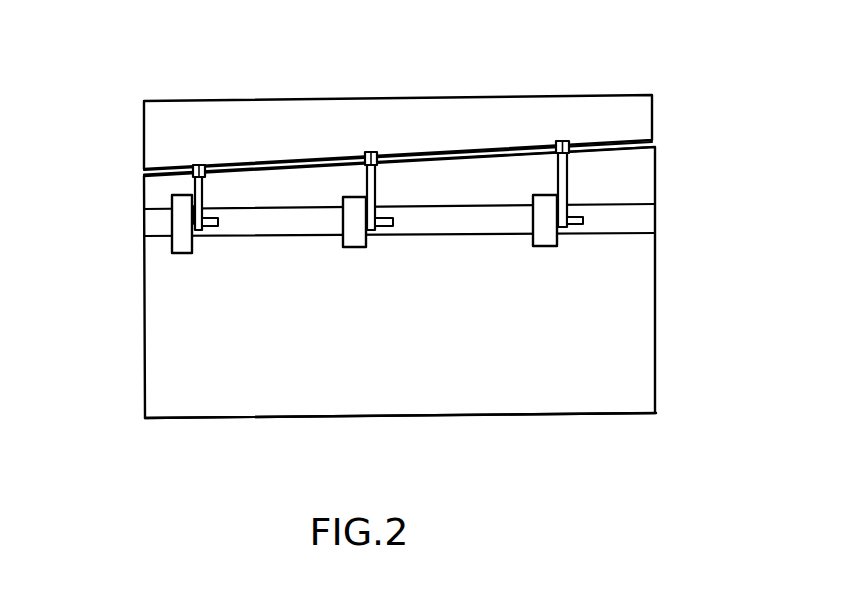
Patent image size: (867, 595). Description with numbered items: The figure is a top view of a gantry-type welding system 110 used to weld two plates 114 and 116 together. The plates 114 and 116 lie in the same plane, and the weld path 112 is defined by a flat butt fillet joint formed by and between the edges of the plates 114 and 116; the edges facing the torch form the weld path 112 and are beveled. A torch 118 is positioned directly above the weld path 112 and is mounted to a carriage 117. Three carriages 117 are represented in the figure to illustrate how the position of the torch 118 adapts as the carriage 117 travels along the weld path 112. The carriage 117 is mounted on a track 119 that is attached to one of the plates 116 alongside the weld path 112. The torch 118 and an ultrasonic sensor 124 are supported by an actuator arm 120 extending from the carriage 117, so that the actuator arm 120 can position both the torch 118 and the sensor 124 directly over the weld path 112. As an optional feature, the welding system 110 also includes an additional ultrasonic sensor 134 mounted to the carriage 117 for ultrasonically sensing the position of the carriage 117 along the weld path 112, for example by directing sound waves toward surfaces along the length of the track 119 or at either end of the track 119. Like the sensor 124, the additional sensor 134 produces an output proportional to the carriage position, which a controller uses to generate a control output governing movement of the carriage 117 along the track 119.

The gantry-type welding system 110 is at (452, 432).
The weld path 112 is at (485, 146).
The plate 114 is at (318, 118).
The plate 116 is at (270, 400).
The carriage 117 is at (177, 250).
The torch 118 is at (195, 166).
The track 119 is at (643, 220).
The actuator arm 120 is at (193, 192).
The ultrasonic sensor 124 is at (200, 165).
The additional ultrasonic sensor 134 is at (210, 228).